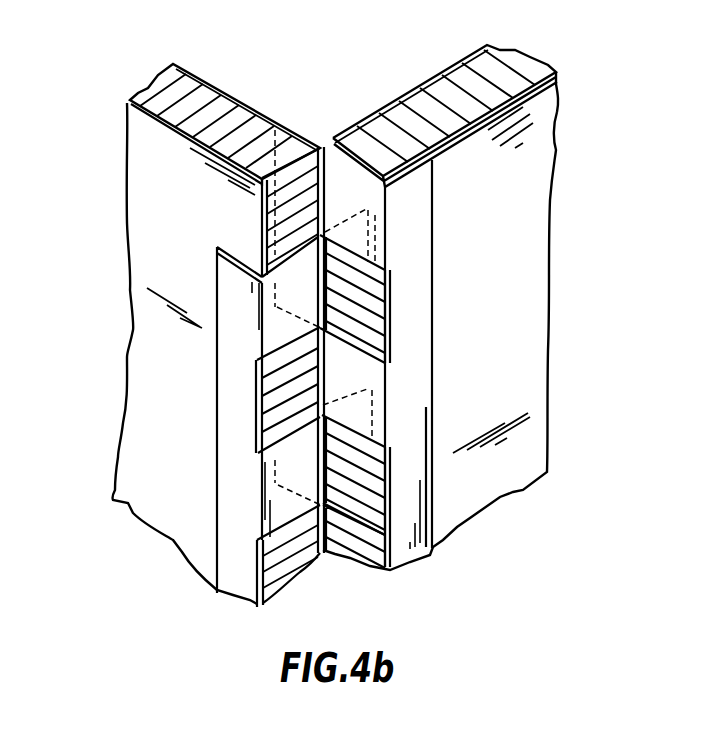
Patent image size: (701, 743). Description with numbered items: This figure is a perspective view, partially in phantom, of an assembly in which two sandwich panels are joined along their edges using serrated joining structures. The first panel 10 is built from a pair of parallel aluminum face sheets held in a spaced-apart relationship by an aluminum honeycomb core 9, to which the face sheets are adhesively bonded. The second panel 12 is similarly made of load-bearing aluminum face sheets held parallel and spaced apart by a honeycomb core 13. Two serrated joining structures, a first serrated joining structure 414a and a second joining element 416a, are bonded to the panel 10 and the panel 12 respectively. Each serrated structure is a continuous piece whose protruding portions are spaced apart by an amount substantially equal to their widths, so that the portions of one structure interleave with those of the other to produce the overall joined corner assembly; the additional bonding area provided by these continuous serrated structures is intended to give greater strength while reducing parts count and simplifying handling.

The honeycomb core 9 is at (150, 92).
The panel 10 is at (133, 156).
The panel 12 is at (547, 133).
The honeycomb core 13 is at (497, 68).
The serrated joining structure 414a is at (227, 337).
The joining element 416a is at (420, 233).